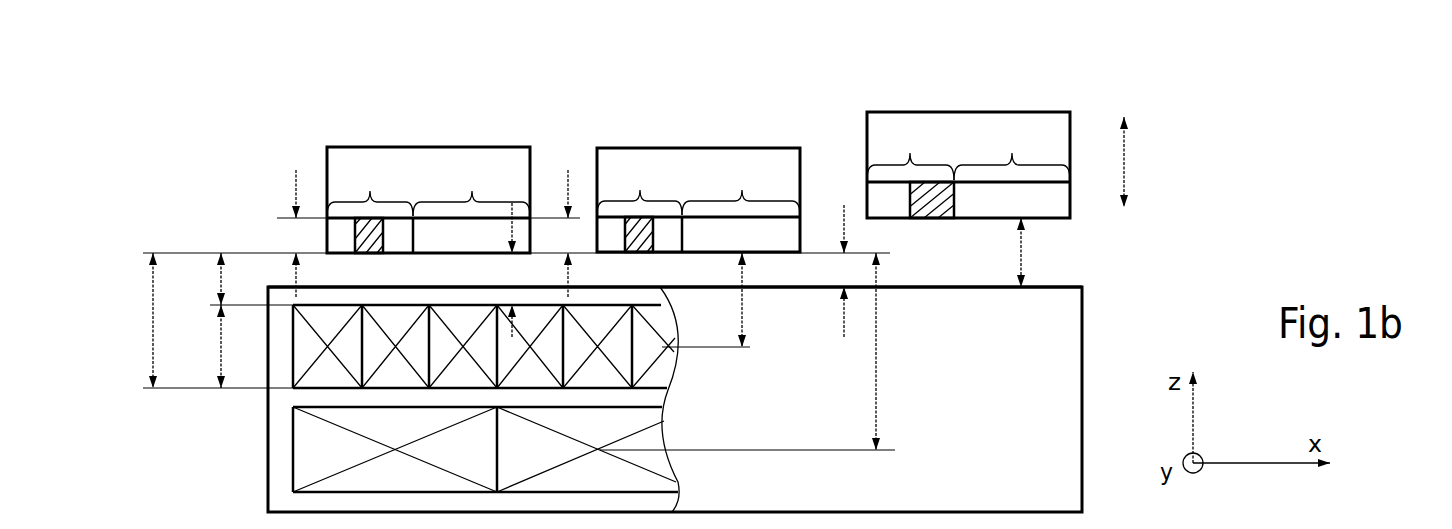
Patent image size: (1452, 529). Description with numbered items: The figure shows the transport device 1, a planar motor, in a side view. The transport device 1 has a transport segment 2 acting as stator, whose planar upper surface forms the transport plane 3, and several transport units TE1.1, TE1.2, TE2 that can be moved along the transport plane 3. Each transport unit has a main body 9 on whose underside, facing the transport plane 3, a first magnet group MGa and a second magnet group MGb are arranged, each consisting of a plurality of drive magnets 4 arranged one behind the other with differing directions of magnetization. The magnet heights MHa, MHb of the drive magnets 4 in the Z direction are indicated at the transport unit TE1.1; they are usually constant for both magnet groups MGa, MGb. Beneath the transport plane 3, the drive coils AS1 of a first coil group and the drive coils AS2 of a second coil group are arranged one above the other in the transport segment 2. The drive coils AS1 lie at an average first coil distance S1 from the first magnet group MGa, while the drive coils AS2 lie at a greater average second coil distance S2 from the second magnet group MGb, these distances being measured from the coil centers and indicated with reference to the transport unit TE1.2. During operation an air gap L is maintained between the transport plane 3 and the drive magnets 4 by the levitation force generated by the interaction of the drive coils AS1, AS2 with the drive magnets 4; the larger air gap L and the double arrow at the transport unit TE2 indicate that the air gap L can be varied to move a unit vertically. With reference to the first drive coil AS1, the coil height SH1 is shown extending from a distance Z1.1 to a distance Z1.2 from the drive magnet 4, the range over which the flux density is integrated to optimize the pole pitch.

The transport device 1 is at (1198, 172).
The transport segment 2 is at (1113, 307).
The transport plane 3 is at (1057, 283).
The drive magnets 4 is at (402, 232).
The main body 9 is at (327, 160).
The transport unit TE1.1 is at (445, 132).
The transport unit TE1.2 is at (634, 134).
The transport unit TE2 is at (858, 128).
The drive coils of the first coil group AS1 is at (640, 357).
The drive coils of the second coil group AS2 is at (618, 473).
The first magnet group MGa is at (640, 170).
The second magnet group MGb is at (741, 170).
The magnet height MHa is at (269, 233).
The magnet height MHb is at (568, 233).
The air gap L is at (769, 270).
The first coil distance S1 is at (757, 300).
The second coil distance S2 is at (893, 351).
The distance z1.1 Z1.1 is at (194, 279).
The distance z2.1 Z1.2 is at (125, 320).
The coil height SH1 is at (198, 346).